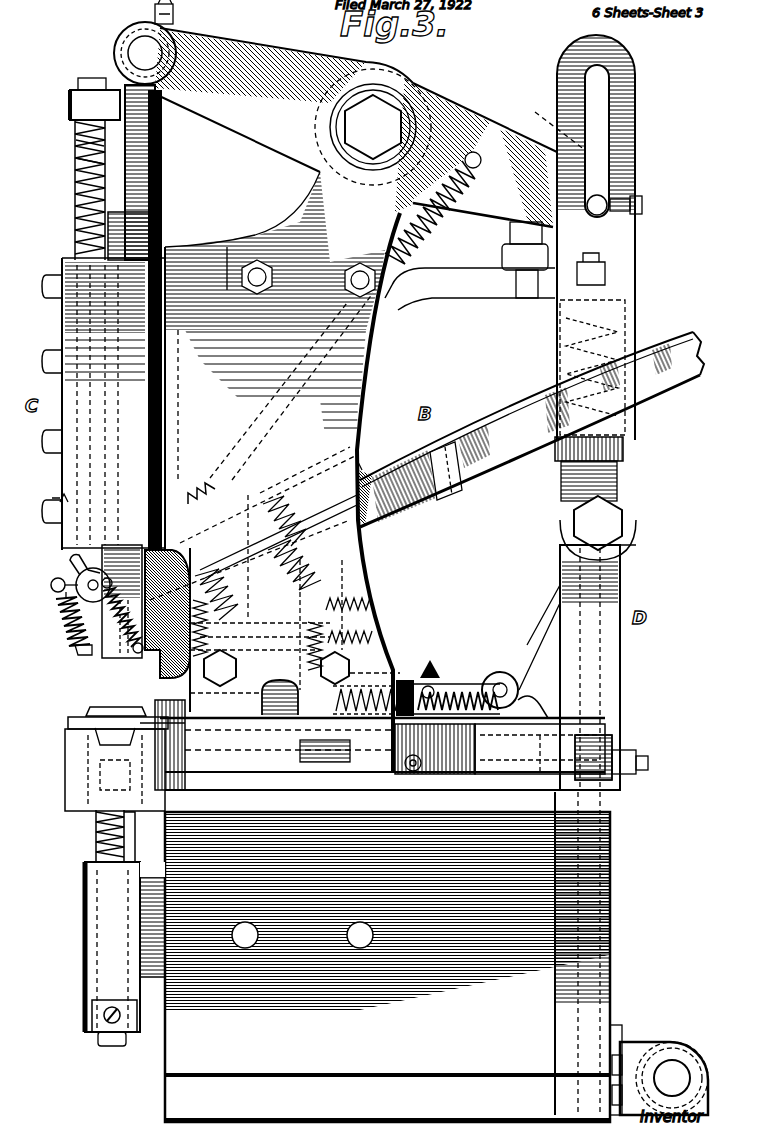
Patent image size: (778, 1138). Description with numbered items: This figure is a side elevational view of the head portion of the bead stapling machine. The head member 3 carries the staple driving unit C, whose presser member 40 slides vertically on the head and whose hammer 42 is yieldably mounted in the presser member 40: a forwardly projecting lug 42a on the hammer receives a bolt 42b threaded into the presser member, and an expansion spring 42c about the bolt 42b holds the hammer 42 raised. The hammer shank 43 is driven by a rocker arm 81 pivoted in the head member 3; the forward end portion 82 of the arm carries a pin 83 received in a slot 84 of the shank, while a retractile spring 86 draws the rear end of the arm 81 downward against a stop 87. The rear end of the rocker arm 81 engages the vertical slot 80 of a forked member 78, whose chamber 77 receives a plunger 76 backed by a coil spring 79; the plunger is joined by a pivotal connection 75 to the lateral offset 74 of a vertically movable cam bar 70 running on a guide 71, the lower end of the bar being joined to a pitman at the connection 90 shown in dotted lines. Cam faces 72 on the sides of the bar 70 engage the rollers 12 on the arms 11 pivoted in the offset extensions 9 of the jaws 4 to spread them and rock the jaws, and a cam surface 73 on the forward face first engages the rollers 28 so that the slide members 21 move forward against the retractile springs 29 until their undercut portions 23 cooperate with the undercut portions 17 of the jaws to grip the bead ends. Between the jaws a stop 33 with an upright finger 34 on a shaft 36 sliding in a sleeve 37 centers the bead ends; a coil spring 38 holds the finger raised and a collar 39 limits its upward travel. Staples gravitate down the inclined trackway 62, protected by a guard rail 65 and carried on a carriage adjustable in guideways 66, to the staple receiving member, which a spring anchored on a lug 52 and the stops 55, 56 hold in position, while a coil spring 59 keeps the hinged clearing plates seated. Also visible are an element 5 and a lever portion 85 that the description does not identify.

The head member 3 is at (282, 472).
The jaws 4 is at (418, 688).
The spring 5 is at (293, 592).
The laterally offset extension 9 is at (398, 741).
The arm 11 is at (493, 774).
The roller 12 is at (590, 740).
The undercut portion 17 is at (68, 721).
The slide member 21 is at (170, 735).
The undercut portion 23 is at (160, 730).
The roller 28 is at (497, 675).
The retractile springs 29 is at (462, 694).
The stop 33 is at (100, 706).
The upright finger 34 is at (88, 762).
The shaft 36 is at (95, 846).
The sleeve 37 is at (85, 931).
The coil spring 38 is at (95, 830).
The collar 39 is at (90, 1016).
The presser member 40 is at (152, 224).
The hammer 42 is at (146, 188).
The forwardly projecting lug 42a is at (80, 108).
The bolt 42b is at (78, 150).
The expansion spring 42c is at (78, 186).
The hammer shank 43 is at (68, 574).
The lug 52 is at (52, 587).
The stop 55 is at (62, 618).
The second stop 56 is at (75, 570).
The coil spring 59 is at (106, 645).
The inclined trackway 62 is at (285, 523).
The guard rail 65 is at (375, 454).
The guideways 66 is at (176, 652).
The cam bar 70 is at (600, 662).
The guide 71 is at (528, 1110).
The cam faces 72 is at (618, 742).
The cam surface 73 is at (545, 622).
The lateral offset 74 is at (622, 552).
The pivotal connection 75 is at (573, 522).
The plunger 76 is at (624, 453).
The chamber 77 is at (630, 305).
The forked member 78 is at (612, 251).
The coil spring 79 is at (630, 332).
The slot 80 is at (600, 137).
The rocker arm 81 is at (484, 128).
The forward end portion 82 is at (262, 55).
The pin 83 is at (146, 52).
The slot 84 is at (132, 55).
The lever portion 85 is at (519, 145).
The retractile spring 86 is at (432, 224).
The stop 87 is at (476, 300).
The pitman connection 90 is at (668, 1048).
The staple driving unit C is at (103, 320).